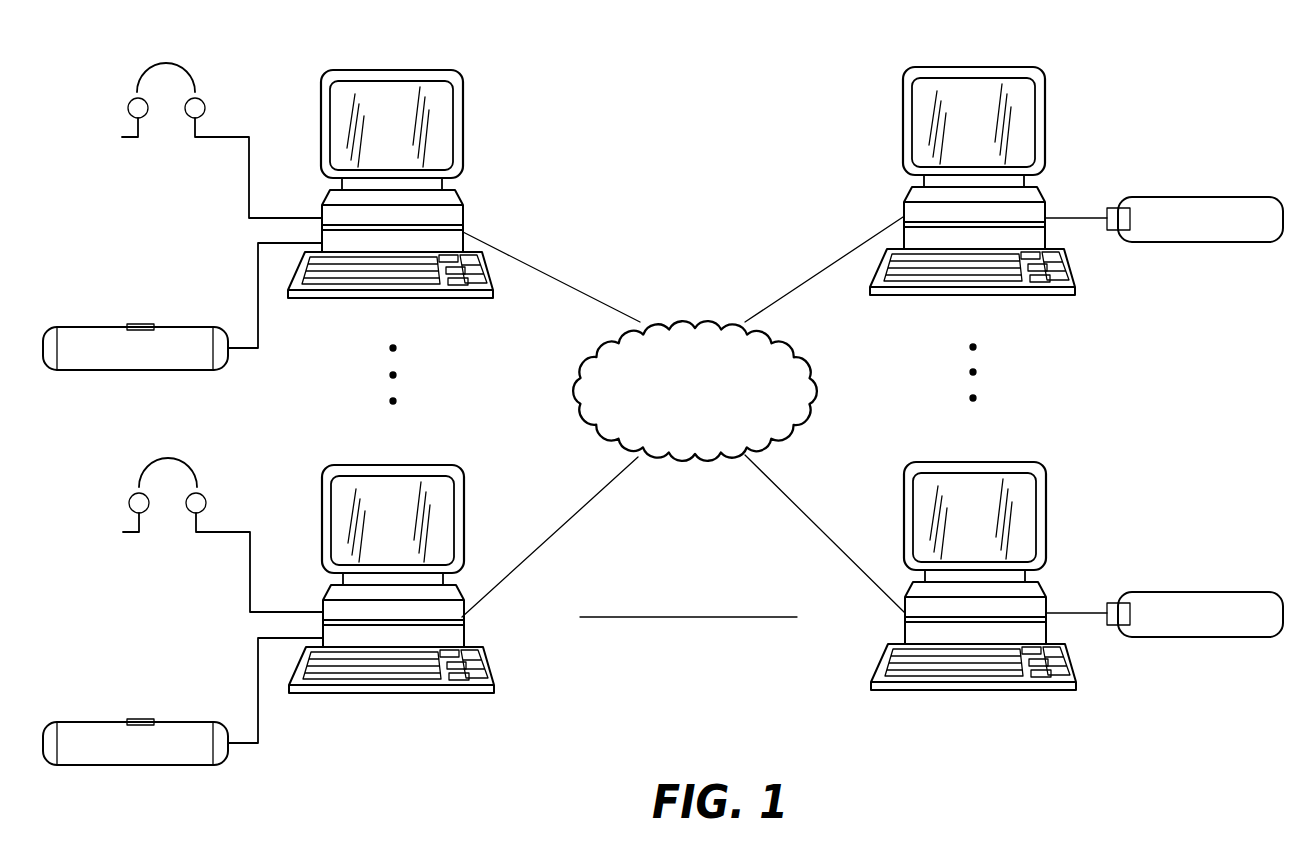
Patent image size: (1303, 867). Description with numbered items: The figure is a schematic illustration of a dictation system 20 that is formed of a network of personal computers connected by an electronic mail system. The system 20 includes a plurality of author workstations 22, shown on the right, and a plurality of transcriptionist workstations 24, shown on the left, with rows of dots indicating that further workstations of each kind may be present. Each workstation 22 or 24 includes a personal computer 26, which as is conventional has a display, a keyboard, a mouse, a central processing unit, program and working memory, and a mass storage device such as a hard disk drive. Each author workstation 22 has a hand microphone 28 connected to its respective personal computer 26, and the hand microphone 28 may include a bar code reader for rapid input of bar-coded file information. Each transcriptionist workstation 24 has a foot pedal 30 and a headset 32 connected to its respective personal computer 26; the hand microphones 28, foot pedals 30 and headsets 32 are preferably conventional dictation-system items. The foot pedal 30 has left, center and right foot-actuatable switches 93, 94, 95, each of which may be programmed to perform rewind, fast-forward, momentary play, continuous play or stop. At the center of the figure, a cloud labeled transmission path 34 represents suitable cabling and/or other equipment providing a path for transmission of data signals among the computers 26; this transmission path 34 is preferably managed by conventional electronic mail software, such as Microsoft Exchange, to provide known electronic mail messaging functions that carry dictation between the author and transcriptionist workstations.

The dictation system 20 is at (671, 183).
The author workstation 22 is at (888, 53).
The transcriptionist workstation 24 is at (476, 52).
The personal computer 26 is at (462, 205).
The hand microphone 28 is at (1178, 197).
The foot pedal 30 is at (233, 373).
The headset 32 is at (157, 68).
The transmission path 34 is at (675, 322).
The left foot-actuatable switch 93 is at (45, 330).
The center foot-actuatable switch 94 is at (142, 324).
The right foot-actuatable switch 95 is at (228, 330).